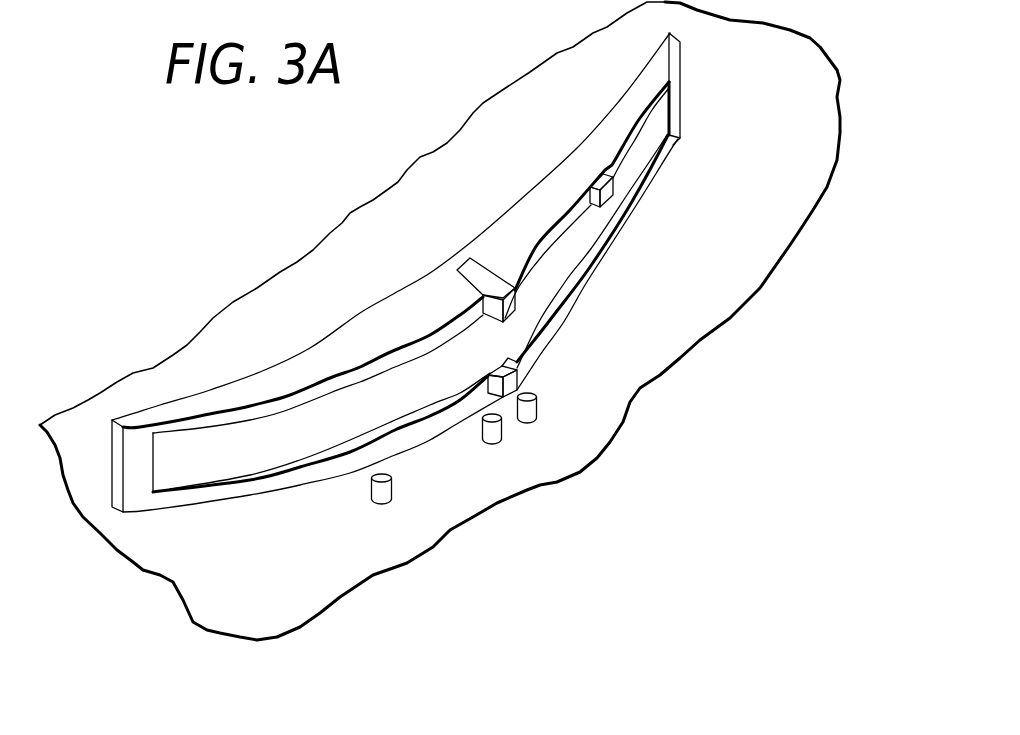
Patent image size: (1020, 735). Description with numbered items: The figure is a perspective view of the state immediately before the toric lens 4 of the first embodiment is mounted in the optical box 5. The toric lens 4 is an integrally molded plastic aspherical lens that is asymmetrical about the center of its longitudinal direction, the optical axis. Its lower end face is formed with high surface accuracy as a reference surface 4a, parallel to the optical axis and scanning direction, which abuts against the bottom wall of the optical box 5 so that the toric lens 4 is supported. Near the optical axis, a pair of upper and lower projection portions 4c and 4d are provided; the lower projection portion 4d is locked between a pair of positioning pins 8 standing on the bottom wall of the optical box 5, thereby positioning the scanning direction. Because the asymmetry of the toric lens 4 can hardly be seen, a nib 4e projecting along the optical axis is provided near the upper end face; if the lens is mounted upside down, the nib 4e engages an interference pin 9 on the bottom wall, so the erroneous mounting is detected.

The toric lens 4 is at (543, 152).
The reference surface 4a is at (260, 499).
The upper projection portion 4c is at (512, 303).
The lower projection portion 4d is at (510, 383).
The nib (projection) 4e is at (612, 188).
The optical box 5 is at (134, 578).
The positioning pins 8 is at (530, 428).
The interference pin 9 is at (384, 505).